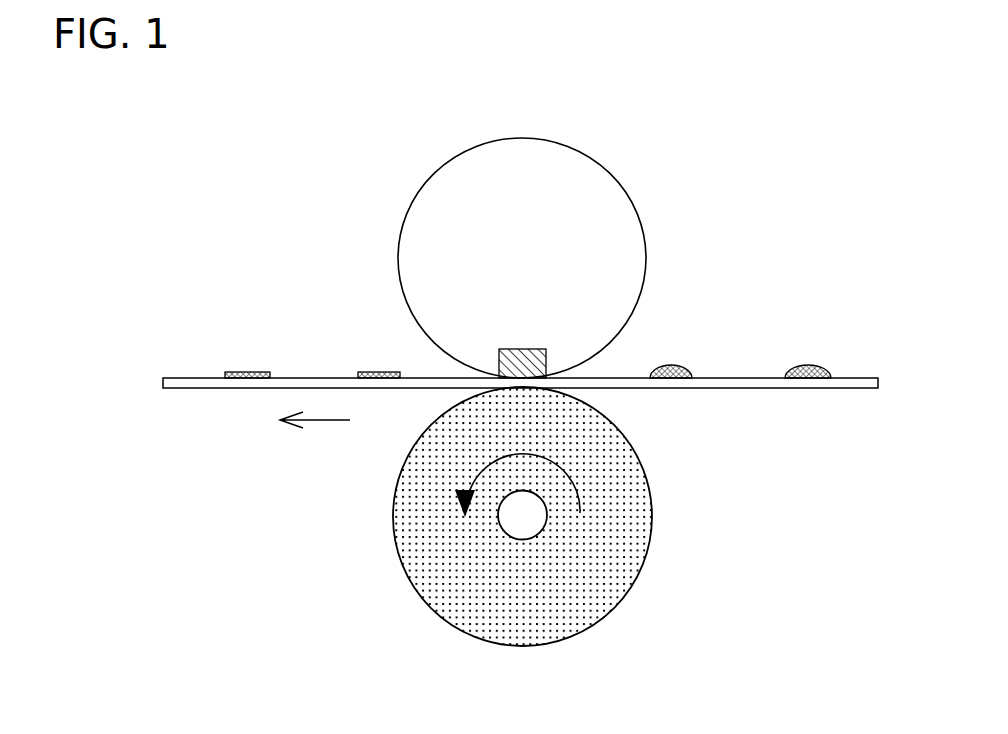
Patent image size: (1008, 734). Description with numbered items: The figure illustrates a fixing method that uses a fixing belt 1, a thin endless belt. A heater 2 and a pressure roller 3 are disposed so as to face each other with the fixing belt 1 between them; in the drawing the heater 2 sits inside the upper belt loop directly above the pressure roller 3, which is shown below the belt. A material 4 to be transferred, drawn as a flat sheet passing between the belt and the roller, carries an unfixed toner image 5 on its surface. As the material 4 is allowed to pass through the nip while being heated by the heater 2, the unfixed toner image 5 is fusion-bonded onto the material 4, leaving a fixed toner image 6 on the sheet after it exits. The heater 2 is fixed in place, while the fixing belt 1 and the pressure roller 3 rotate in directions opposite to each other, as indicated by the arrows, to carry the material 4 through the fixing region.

The fixing belt 1 is at (595, 170).
The heater 2 is at (546, 350).
The pressure roller 3 is at (627, 548).
The material to be transferred 4 is at (748, 390).
The unfixed toner image 5 is at (810, 372).
The fixed toner image 6 is at (250, 372).